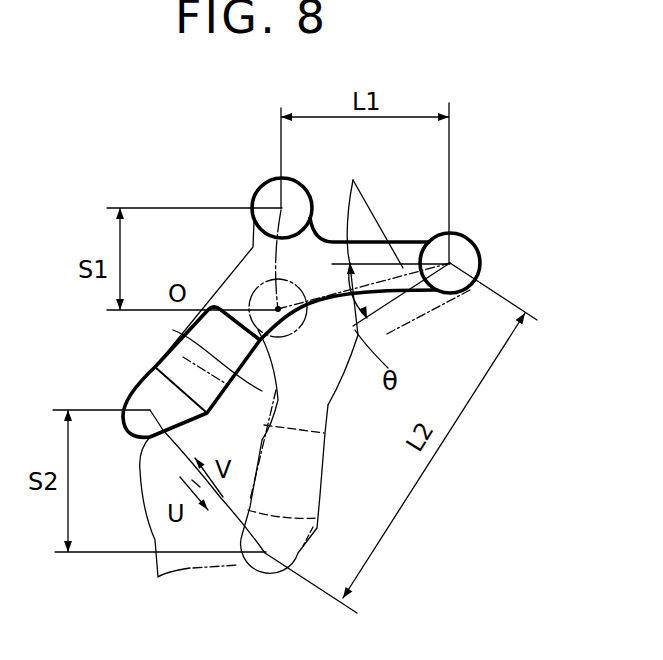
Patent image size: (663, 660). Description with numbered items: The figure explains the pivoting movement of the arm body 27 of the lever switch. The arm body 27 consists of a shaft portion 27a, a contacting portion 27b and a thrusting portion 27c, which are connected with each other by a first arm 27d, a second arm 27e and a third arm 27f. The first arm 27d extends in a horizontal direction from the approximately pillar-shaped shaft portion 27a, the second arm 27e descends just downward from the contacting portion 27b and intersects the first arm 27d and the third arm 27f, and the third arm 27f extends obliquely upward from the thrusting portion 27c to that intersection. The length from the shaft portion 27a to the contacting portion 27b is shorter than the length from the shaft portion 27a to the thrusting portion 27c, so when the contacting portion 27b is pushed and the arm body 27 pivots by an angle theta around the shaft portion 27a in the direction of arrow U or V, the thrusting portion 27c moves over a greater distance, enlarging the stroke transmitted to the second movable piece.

The arm body 27 is at (410, 237).
The shaft portion 27a is at (468, 254).
The contacting portion 27b is at (267, 197).
The thrusting portion 27c is at (157, 567).
The first arm 27d is at (362, 173).
The second arm 27e is at (262, 248).
The third arm 27f is at (173, 330).